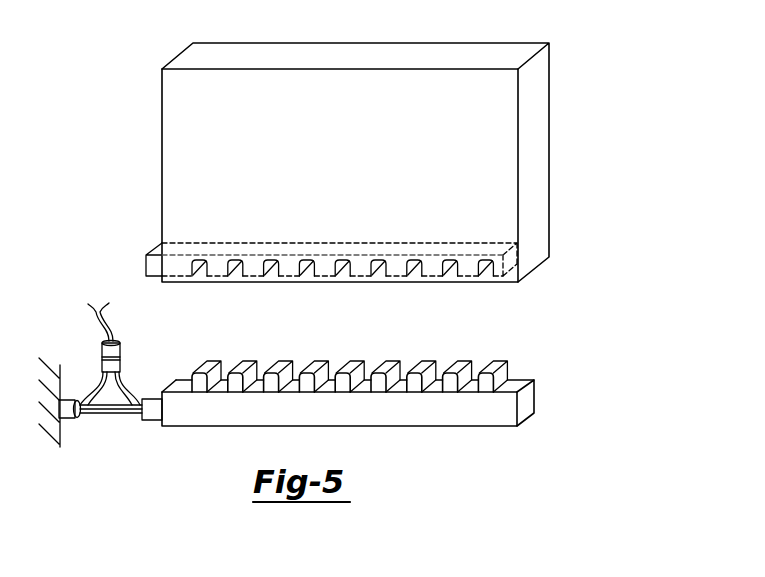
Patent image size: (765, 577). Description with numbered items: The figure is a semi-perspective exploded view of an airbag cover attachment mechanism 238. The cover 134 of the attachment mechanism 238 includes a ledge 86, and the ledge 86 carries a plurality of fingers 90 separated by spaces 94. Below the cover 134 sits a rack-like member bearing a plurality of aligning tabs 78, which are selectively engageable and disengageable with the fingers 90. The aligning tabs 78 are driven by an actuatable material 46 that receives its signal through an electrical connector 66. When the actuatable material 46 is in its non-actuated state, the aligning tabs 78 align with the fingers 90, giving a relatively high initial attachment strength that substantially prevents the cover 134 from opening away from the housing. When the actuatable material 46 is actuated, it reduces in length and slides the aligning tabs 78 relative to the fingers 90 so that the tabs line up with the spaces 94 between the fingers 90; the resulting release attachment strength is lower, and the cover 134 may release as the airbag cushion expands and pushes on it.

The cover 134 is at (518, 128).
The ledge 86 is at (148, 251).
The fingers 90 is at (508, 258).
The spaces 94 is at (416, 264).
The attachment mechanism 238 is at (391, 355).
The aligning tabs 78 is at (412, 374).
The actuatable material 46 is at (110, 415).
The electrical connector 66 is at (92, 332).